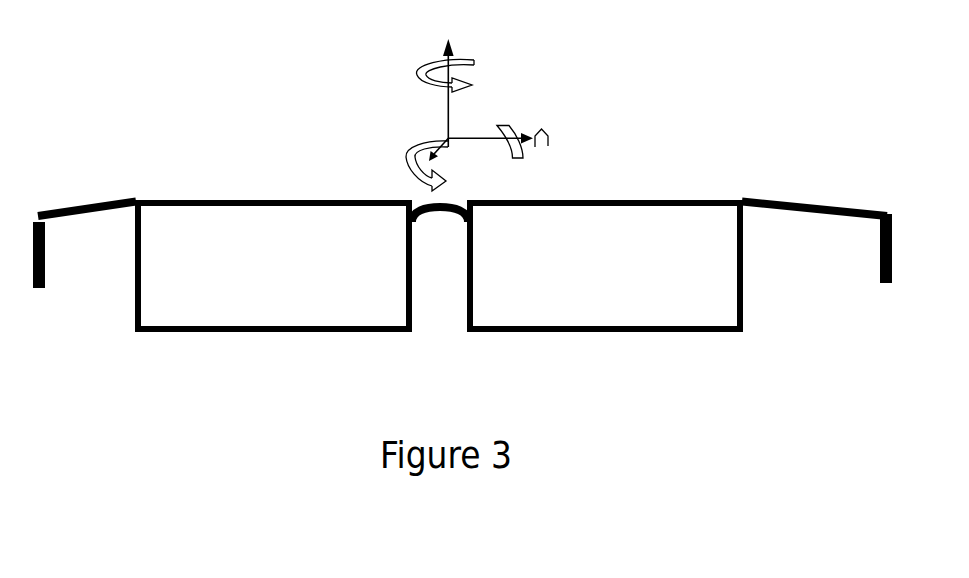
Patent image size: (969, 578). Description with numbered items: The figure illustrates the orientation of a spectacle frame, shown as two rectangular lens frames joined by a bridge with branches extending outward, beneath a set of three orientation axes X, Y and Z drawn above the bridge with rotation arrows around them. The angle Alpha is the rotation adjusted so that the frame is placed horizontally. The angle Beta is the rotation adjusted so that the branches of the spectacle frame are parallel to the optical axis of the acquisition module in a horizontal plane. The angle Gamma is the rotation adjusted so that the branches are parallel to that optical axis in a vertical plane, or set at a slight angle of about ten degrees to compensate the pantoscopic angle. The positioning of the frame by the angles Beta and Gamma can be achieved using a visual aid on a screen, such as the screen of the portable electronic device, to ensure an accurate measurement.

The X axis X is at (519, 136).
The Y axis Y is at (451, 77).
The Z axis Z is at (412, 163).
The angle Alpha is at (376, 157).
The angle Beta is at (484, 74).
The angle Gamma is at (563, 154).